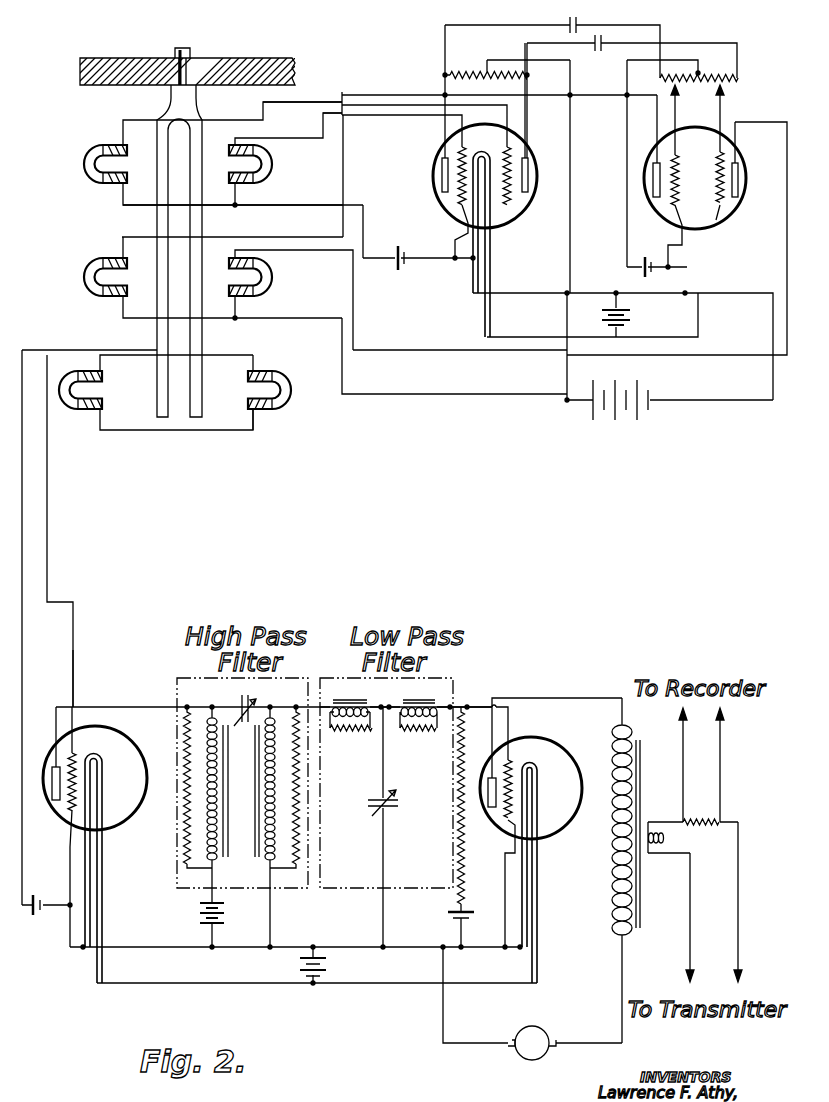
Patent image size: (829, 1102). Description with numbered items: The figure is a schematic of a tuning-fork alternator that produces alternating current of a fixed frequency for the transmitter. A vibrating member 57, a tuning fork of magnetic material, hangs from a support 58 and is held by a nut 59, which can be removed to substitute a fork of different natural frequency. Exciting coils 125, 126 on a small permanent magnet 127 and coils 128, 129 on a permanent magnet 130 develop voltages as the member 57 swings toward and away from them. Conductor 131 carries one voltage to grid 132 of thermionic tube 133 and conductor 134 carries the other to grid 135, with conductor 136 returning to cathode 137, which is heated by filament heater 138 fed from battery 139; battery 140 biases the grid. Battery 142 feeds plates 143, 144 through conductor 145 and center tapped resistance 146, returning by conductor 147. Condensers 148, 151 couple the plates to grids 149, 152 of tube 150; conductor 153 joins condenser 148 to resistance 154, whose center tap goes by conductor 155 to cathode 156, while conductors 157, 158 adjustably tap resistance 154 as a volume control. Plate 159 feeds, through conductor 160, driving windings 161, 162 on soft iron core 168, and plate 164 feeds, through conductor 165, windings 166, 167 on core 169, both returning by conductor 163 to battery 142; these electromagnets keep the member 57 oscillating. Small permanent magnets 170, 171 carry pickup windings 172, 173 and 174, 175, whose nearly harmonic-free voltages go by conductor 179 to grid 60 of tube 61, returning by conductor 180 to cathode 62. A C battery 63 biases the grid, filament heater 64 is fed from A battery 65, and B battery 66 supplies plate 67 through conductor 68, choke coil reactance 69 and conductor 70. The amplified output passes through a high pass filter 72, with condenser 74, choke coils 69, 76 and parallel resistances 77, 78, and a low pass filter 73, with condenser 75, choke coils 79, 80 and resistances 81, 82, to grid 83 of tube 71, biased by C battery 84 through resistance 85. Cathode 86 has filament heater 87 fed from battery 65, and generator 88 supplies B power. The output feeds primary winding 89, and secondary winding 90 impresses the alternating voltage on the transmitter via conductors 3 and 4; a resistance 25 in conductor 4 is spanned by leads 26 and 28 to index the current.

The conductor 3 is at (690, 922).
The conductor 4 is at (738, 922).
The resistance 25 is at (692, 820).
The conductor 26 is at (720, 786).
The conductor 28 is at (683, 764).
The vibrating member 57 is at (197, 347).
The support 58 is at (262, 60).
The nut 59 is at (190, 50).
The grid 60 is at (72, 753).
The thermionic tube 61 is at (132, 743).
The cathode 62 is at (70, 839).
The "C" battery 63 is at (38, 924).
The filament heater 64 is at (102, 790).
The "A" battery 65 is at (335, 965).
The "B" battery 66 is at (226, 915).
The plate 67 is at (52, 803).
The conductor 68 is at (212, 872).
The choke coil reactance 69 is at (217, 809).
The conductor 70 is at (120, 707).
The thermionic tube 71 is at (558, 751).
The high pass filter 72 is at (295, 682).
The low pass filter 73 is at (452, 682).
The condenser 74 is at (255, 703).
The condenser 75 is at (398, 802).
The choke coil reactance 76 is at (274, 817).
The resistance 77 is at (187, 845).
The resistance 78 is at (296, 777).
The choke coil reactance 79 is at (352, 702).
The choke coil reactance 80 is at (411, 702).
The resistance 81 is at (345, 739).
The resistance 82 is at (418, 739).
The grid 83 is at (508, 762).
The "C" battery 84 is at (443, 916).
The resistance 85 is at (461, 862).
The cathode 86 is at (500, 828).
The filament heater 87 is at (537, 795).
The generator 88 is at (548, 1032).
The primary winding 89 is at (612, 845).
The secondary winding 90 is at (664, 840).
The exciting coil 125 is at (120, 143).
The exciting coil 126 is at (123, 188).
The permanent magnet 127 is at (82, 172).
The exciting coil 128 is at (268, 145).
The exciting coil 129 is at (258, 185).
The permanent magnet 130 is at (272, 164).
The conductor 131 is at (317, 100).
The grid 132 is at (507, 205).
The thermionic tube 133 is at (520, 156).
The conductor 134 is at (395, 120).
The grid 135 is at (455, 192).
The conductor 136 is at (305, 205).
The cathode 137 is at (450, 220).
The filament heater 138 is at (490, 217).
The battery 139 is at (630, 318).
The battery 140 is at (398, 275).
The battery 142 is at (652, 416).
The plate 143 is at (440, 178).
The plate 144 is at (528, 185).
The conductor 145 is at (570, 241).
The center tapped resistance 146 is at (475, 72).
The conductor 147 is at (735, 294).
The condenser 148 is at (577, 26).
The grid 149 is at (675, 158).
The thermionic tube 150 is at (744, 155).
The condenser 151 is at (600, 50).
The grid 152 is at (716, 220).
The conductor 153 is at (660, 27).
The resistance 154 is at (698, 73).
The conductor 155 is at (627, 170).
The cathode 156 is at (668, 230).
The conductor 157 is at (675, 114).
The conductor 158 is at (720, 117).
The plate 159 is at (655, 205).
The conductor 160 is at (343, 155).
The driving winding 161 is at (110, 258).
The driving winding 162 is at (116, 308).
The conductor 163 is at (443, 394).
The plate 164 is at (738, 184).
The conductor 165 is at (403, 350).
The driving winding 166 is at (270, 258).
The driving winding 167 is at (272, 296).
The electromagnet core 168 is at (85, 292).
The electromagnet core 169 is at (274, 277).
The permanent magnet 170 is at (65, 415).
The permanent magnet 171 is at (289, 394).
The pickup winding 172 is at (96, 385).
The pickup winding 173 is at (96, 410).
The pickup winding 174 is at (257, 372).
The pickup winding 175 is at (262, 412).
The conductor 179 is at (73, 656).
The conductor 180 is at (22, 636).